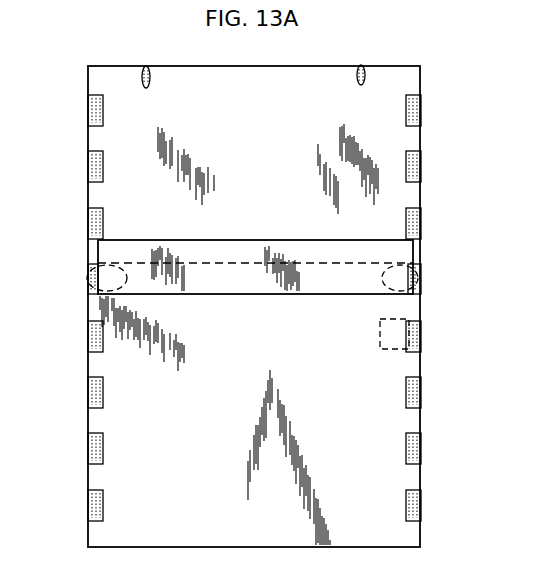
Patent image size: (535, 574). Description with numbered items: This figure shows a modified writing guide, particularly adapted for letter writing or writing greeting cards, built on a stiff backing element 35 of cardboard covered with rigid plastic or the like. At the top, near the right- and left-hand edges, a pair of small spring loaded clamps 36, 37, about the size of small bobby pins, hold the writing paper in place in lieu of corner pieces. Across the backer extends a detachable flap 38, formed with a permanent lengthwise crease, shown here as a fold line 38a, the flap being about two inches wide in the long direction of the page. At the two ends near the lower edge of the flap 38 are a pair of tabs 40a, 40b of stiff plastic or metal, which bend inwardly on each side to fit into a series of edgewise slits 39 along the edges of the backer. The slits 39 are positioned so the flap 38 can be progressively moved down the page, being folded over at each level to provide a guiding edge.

The stiff backing element 35 is at (396, 165).
The spring loaded clamp 36 is at (146, 64).
The spring loaded clamp 37 is at (361, 64).
The detachable flap 38 is at (253, 248).
The fold line 38a is at (246, 266).
The edgewise slits 39 is at (411, 106).
The tab 40a is at (95, 278).
The tab 40b is at (420, 279).